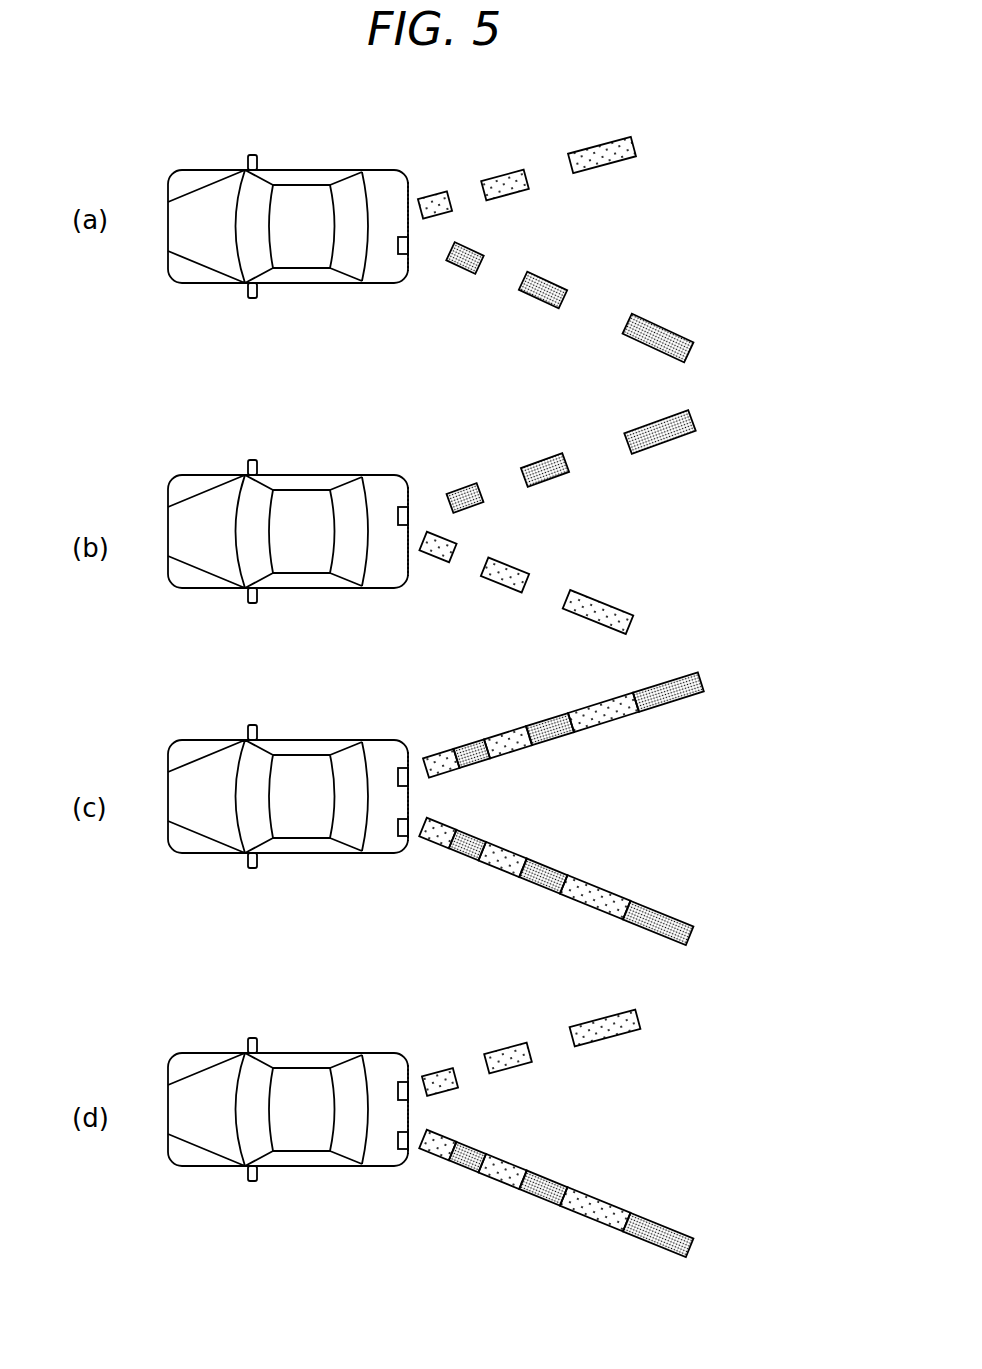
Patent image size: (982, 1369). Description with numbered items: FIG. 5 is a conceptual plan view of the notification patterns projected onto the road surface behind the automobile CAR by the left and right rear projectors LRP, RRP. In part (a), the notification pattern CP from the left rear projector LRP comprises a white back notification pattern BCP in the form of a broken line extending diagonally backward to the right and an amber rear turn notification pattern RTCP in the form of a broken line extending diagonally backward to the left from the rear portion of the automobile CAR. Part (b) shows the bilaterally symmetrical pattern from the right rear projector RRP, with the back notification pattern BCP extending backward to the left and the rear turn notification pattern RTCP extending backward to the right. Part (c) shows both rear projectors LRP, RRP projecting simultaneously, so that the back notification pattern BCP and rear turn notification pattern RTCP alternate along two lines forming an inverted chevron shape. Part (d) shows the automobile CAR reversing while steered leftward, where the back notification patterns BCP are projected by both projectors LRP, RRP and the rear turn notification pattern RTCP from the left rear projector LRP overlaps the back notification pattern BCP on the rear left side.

The automobile CAR is at (325, 284).
The left rear projector LRP is at (403, 255).
The right rear projector RRP is at (402, 506).
The back notification pattern BCP is at (585, 170).
The rear turn notification pattern RTCP is at (655, 322).
The notification pattern CP is at (653, 162).